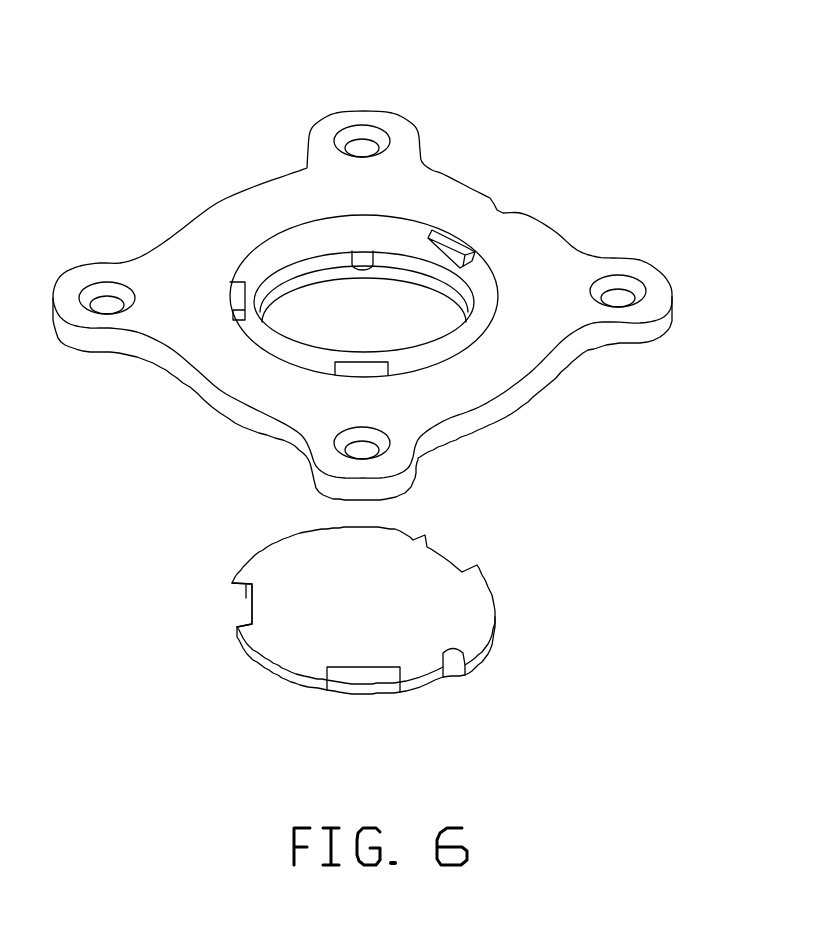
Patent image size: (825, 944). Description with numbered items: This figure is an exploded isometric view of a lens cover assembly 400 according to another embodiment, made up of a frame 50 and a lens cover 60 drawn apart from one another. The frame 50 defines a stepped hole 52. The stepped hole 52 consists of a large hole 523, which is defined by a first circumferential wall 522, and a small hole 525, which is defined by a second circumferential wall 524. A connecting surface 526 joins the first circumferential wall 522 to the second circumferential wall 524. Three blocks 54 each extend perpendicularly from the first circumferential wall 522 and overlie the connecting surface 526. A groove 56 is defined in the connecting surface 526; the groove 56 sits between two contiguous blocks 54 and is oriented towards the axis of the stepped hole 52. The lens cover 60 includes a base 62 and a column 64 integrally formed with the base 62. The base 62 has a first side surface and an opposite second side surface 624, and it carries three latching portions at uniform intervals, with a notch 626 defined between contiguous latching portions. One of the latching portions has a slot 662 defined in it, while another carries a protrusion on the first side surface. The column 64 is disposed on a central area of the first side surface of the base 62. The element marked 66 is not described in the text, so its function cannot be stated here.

The lens cover assembly 400 is at (392, 46).
The frame 50 is at (480, 449).
The stepped hole 52 is at (771, 351).
The first circumferential wall 522 is at (320, 232).
The large hole 523 is at (632, 344).
The second circumferential wall 524 is at (293, 288).
The small hole 525 is at (425, 348).
The connecting surface 526 is at (467, 290).
The block 54 is at (240, 300).
The groove 56 is at (363, 260).
The lens cover 60 is at (507, 612).
The base 62 is at (338, 590).
The second side surface 624 is at (323, 607).
The notch 626 is at (243, 617).
The column 64 is at (367, 688).
The peripheral side surface 66 is at (477, 627).
The slot 662 is at (455, 661).